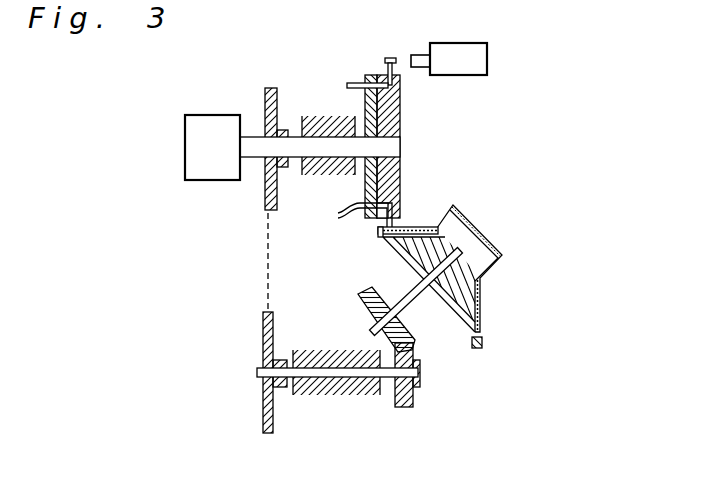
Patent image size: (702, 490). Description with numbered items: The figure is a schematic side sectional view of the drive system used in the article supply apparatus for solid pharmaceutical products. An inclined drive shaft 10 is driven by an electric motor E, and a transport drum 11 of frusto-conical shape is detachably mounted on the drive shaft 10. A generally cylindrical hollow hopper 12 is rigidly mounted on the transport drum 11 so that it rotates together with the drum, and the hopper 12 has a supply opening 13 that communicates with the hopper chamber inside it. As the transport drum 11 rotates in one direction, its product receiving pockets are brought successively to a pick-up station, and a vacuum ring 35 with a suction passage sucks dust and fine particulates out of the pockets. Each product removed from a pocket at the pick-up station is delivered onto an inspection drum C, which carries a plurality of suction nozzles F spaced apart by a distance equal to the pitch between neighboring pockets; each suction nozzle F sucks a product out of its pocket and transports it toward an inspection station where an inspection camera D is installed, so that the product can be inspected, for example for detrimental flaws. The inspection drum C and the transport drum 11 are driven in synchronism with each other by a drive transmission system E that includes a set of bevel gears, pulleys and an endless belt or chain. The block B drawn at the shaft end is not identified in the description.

The drive motor B is at (208, 122).
The inspection drum C is at (387, 177).
The inspection camera D is at (480, 58).
The drive transmission system E is at (263, 332).
The suction nozzles F is at (377, 228).
The inclined drive shaft 10 is at (403, 296).
The transport drum 11 is at (452, 308).
The hopper 12 is at (490, 264).
The supply opening 13 is at (478, 231).
The vacuum ring 35 is at (478, 346).